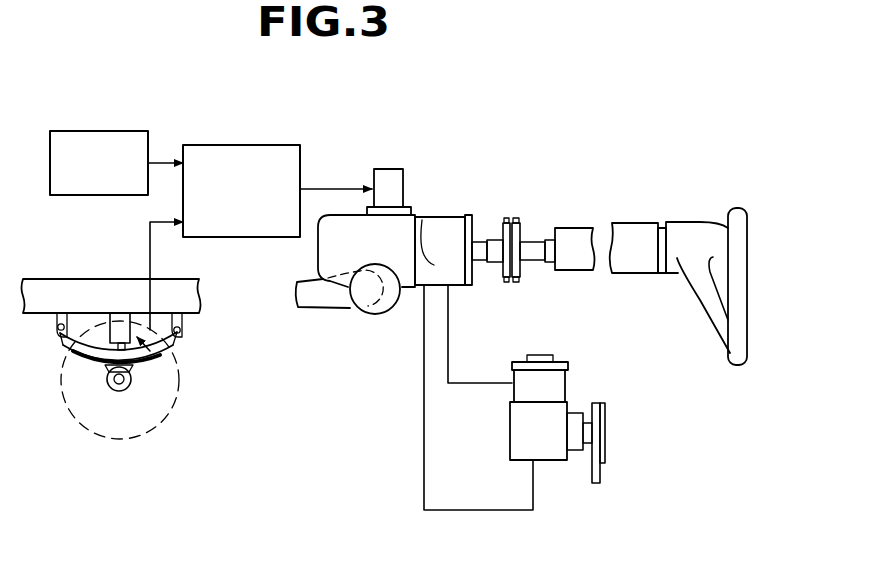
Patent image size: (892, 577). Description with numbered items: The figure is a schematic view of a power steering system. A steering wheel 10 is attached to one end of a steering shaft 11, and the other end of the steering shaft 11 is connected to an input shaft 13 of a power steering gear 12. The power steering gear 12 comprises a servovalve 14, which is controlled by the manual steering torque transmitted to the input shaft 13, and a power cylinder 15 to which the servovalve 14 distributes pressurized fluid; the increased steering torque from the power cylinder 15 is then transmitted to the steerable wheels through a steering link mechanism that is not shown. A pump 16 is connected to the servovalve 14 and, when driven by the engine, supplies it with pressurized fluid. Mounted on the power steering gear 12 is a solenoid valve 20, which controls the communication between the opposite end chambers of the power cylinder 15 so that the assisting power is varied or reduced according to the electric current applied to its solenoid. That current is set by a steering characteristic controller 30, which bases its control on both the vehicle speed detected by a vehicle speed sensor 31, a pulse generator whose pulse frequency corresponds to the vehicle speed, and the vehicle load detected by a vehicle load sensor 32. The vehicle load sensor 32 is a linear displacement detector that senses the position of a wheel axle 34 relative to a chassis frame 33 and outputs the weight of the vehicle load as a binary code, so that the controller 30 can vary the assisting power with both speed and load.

The steering wheel 10 is at (735, 353).
The steering shaft 11 is at (535, 237).
The power steering gear 12 is at (375, 316).
The input shaft 13 is at (477, 255).
The servovalve 14 is at (447, 225).
The power cylinder 15 is at (345, 220).
The pump 16 is at (543, 467).
The solenoid valve 20 is at (390, 177).
The steering characteristic controller 30 is at (242, 148).
The vehicle speed sensor 31 is at (123, 133).
The vehicle load sensor 32 is at (160, 360).
The chassis frame 33 is at (187, 287).
The wheel axle 34 is at (128, 384).